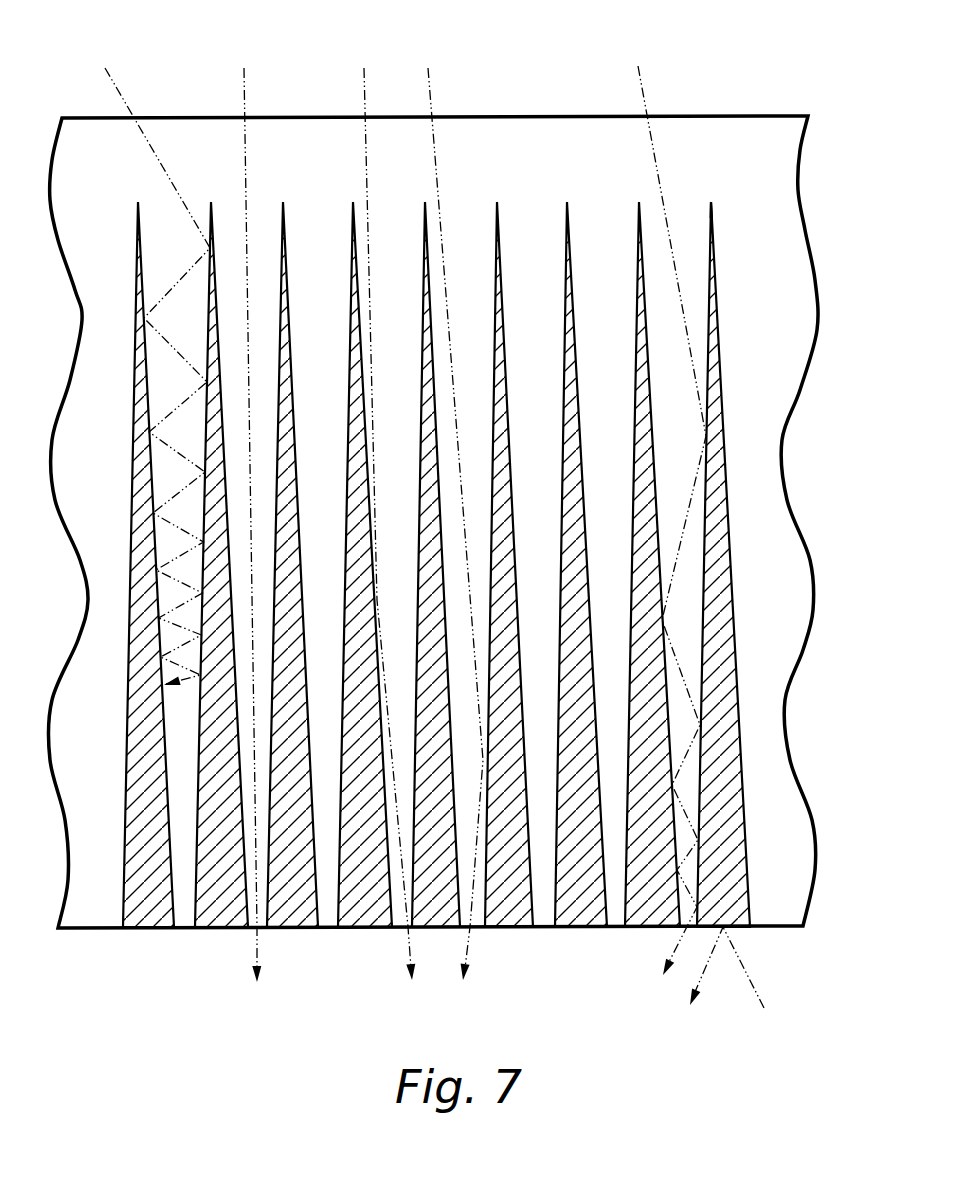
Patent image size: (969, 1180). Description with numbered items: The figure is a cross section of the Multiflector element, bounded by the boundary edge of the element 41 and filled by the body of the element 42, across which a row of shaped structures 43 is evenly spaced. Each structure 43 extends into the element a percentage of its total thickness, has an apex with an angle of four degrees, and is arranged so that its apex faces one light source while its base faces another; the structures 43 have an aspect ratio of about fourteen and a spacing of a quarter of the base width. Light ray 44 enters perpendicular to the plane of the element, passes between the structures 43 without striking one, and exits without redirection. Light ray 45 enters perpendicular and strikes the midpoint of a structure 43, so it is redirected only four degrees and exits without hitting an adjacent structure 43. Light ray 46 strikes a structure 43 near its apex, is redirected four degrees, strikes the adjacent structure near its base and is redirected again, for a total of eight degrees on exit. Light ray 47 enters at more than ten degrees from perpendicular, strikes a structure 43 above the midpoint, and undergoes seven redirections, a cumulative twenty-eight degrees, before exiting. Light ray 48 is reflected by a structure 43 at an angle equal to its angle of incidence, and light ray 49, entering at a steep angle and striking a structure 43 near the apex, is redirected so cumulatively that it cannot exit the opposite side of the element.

The boundary edge of the element 41 is at (84, 118).
The body of the element 42 is at (721, 402).
The structures 43 is at (712, 202).
The light ray 44 is at (246, 92).
The light ray 45 is at (365, 98).
The light ray 46 is at (431, 102).
The light ray 47 is at (645, 97).
The light ray 48 is at (743, 966).
The light ray 49 is at (120, 93).